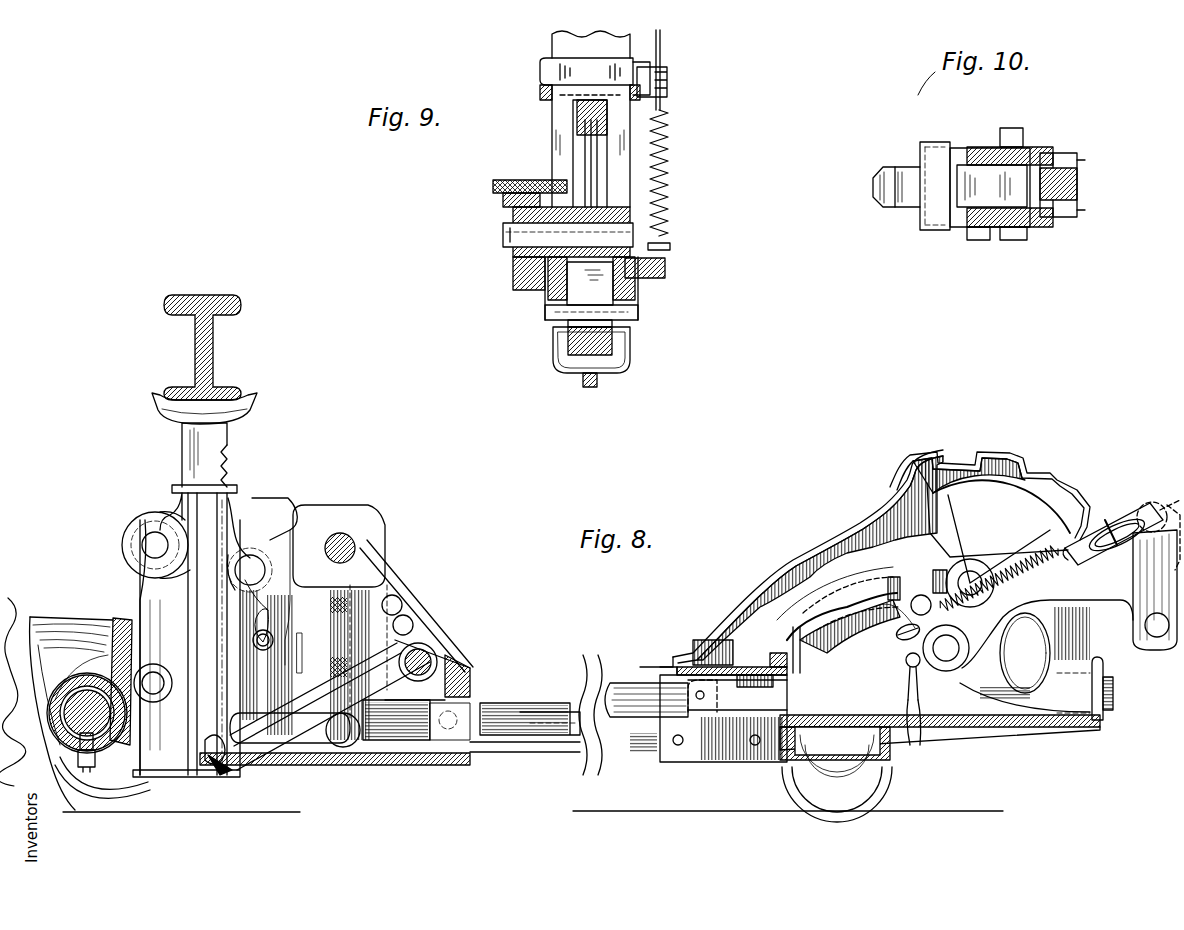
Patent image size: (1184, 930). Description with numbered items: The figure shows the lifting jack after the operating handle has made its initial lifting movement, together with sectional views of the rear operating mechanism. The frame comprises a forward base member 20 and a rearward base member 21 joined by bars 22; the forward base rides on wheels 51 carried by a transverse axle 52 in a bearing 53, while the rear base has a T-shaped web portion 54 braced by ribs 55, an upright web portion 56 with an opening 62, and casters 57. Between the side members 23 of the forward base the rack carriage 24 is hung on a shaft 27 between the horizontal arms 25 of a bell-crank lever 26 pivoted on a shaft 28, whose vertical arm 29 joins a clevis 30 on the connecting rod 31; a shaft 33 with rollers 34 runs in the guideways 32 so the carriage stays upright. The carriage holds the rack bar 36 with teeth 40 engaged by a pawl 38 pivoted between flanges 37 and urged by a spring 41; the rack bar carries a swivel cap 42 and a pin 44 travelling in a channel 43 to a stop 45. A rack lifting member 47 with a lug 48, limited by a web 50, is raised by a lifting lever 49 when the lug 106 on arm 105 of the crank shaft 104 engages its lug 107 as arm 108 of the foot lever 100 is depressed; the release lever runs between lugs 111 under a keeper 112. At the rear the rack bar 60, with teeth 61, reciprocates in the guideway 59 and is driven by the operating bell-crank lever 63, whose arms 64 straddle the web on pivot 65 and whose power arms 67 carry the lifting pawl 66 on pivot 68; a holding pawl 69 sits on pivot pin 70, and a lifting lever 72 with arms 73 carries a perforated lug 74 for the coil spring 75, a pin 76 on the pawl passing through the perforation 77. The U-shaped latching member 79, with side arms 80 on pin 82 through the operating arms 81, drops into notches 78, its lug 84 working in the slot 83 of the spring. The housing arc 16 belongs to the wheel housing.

In FIG. 8, the housing arc 16 is at (95, 650).
In FIG. 8, the forward base member 20 is at (330, 763).
In FIG. 9, the rearward base member 21 is at (563, 374).
In FIG. 10, the rearward base member 21 is at (1082, 197).
In FIG. 8, the rearward base member 21 is at (1100, 726).
In FIG. 8, the bars 22 is at (590, 711).
In FIG. 8, the side members 23 is at (380, 590).
In FIG. 8, the rack guide or carriage 24 is at (193, 665).
In FIG. 8, the horizontal arms 25 is at (288, 520).
In FIG. 8, the bell-crank lever 26 is at (362, 518).
In FIG. 8, the shaft 27 is at (158, 544).
In FIG. 8, the shaft 28 is at (387, 548).
In FIG. 8, the vertical arm 29 is at (383, 573).
In FIG. 8, the clevis 30 is at (425, 745).
In FIG. 8, the connecting rod 31 is at (628, 718).
In FIG. 8, the grooves or guideways 32 is at (192, 777).
In FIG. 8, the shaft 33 is at (150, 690).
In FIG. 8, the roller 34 is at (118, 658).
In FIG. 8, the rack bar 36 is at (194, 456).
In FIG. 8, the vertical flanges 37 is at (247, 537).
In FIG. 8, the pawl 38 is at (262, 530).
In FIG. 8, the teeth 40 is at (228, 463).
In FIG. 8, the spring 41 is at (273, 737).
In FIG. 8, the swivel cap 42 is at (252, 413).
In FIG. 8, the internal vertical channel 43 is at (200, 585).
In FIG. 8, the pin 44 is at (183, 630).
In FIG. 8, the stop 45 is at (176, 500).
In FIG. 8, the rack lifting member 47 is at (195, 735).
In FIG. 8, the outwardly projecting lug 48 is at (218, 765).
In FIG. 8, the lifting lever 49 is at (280, 745).
In FIG. 8, the web 50 is at (196, 500).
In FIG. 8, the wheels 51 is at (97, 803).
In FIG. 8, the transverse axle 52 is at (85, 740).
In FIG. 8, the bearing 53 is at (88, 755).
In FIG. 8, the horizontal T-shaped web portion 54 is at (810, 730).
In FIG. 8, the longitudinal and transverse ribs 55 is at (770, 767).
In FIG. 9, the longitudinal upright web portion 56 is at (580, 126).
In FIG. 10, the longitudinal upright web portion 56 is at (1074, 177).
In FIG. 8, the longitudinal upright web portion 56 is at (927, 498).
In FIG. 8, the casters 57 is at (813, 803).
In FIG. 9, the longitudinal guide-way 59 is at (560, 360).
In FIG. 9, the rack bar 60 is at (562, 349).
In FIG. 10, the rack bar 60 is at (878, 180).
In FIG. 8, the rack bar 60 is at (717, 708).
In FIG. 9, the teeth 61 is at (556, 333).
In FIG. 10, the teeth 61 is at (903, 167).
In FIG. 8, the teeth 61 is at (740, 647).
In FIG. 8, the opening 62 is at (873, 607).
In FIG. 9, the bell-crank lever 63 is at (545, 123).
In FIG. 8, the bell-crank lever 63 is at (1077, 566).
In FIG. 9, the arms 64 is at (590, 146).
In FIG. 8, the arms 64 is at (1073, 610).
In FIG. 9, the pivot 65 is at (508, 248).
In FIG. 8, the pivot 65 is at (978, 577).
In FIG. 9, the lifting pawl 66 is at (580, 279).
In FIG. 10, the lifting pawl 66 is at (960, 190).
In FIG. 8, the lifting pawl 66 is at (915, 668).
In FIG. 9, the power arms 67 is at (550, 283).
In FIG. 10, the power arms 67 is at (1045, 152).
In FIG. 8, the power arms 67 is at (1030, 688).
In FIG. 10, the pivot 68 is at (1015, 130).
In FIG. 8, the pivot 68 is at (1013, 683).
In FIG. 8, the holding pawl 69 is at (833, 660).
In FIG. 8, the pivot pin 70 is at (900, 593).
In FIG. 9, the lifting lever 72 is at (638, 314).
In FIG. 10, the lifting lever 72 is at (925, 142).
In FIG. 8, the lifting lever 72 is at (760, 653).
In FIG. 9, the arms 73 is at (548, 300).
In FIG. 10, the arms 73 is at (965, 148).
In FIG. 10, the upstanding perforated lug 74 is at (980, 240).
In FIG. 8, the upstanding perforated lug 74 is at (923, 613).
In FIG. 9, the coil spring 75 is at (666, 160).
In FIG. 8, the coil spring 75 is at (930, 470).
In FIG. 8, the pin or lug 76 is at (915, 668).
In FIG. 8, the perforation 77 is at (925, 672).
In FIG. 9, the notches 78 is at (574, 100).
In FIG. 8, the notches 78 is at (960, 452).
In FIG. 9, the U-shaped latching member 79 is at (563, 63).
In FIG. 8, the U-shaped latching member 79 is at (1124, 574).
In FIG. 9, the side arms 80 is at (541, 68).
In FIG. 8, the side arms 80 is at (1158, 520).
In FIG. 8, the operating arms 81 is at (1147, 643).
In FIG. 8, the pin 82 is at (1158, 637).
In FIG. 8, the slot 83 is at (1112, 523).
In FIG. 9, the lug 84 is at (668, 88).
In FIG. 8, the lug 84 is at (1153, 500).
In FIG. 9, the double acting foot lever 100 is at (520, 266).
In FIG. 8, the crank shaft 104 is at (432, 660).
In FIG. 8, the upstanding arm 105 is at (403, 606).
In FIG. 8, the laterally extending lug 106 is at (413, 623).
In FIG. 8, the upstanding lug 107 is at (432, 634).
In FIG. 9, the arm 108 is at (520, 196).
In FIG. 8, the lugs 111 is at (385, 765).
In FIG. 8, the keeper 112 is at (435, 600).